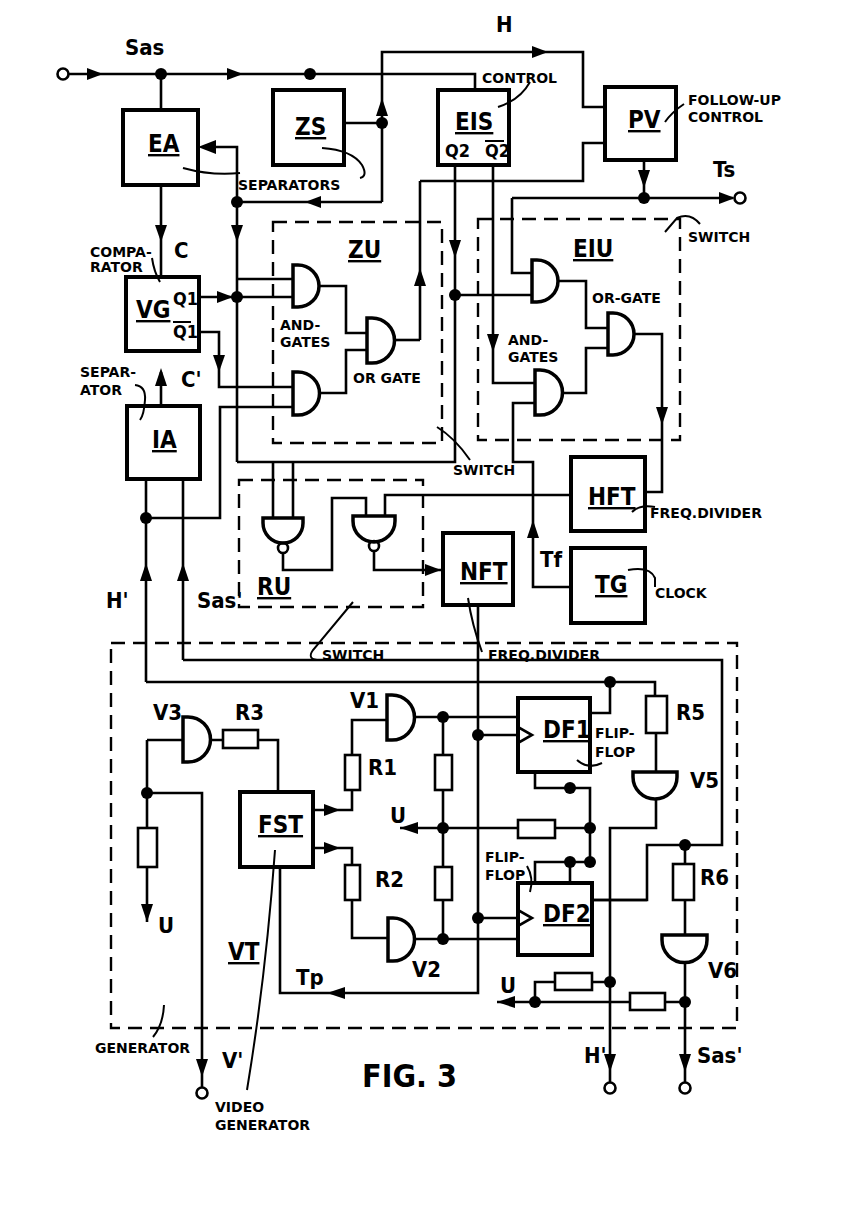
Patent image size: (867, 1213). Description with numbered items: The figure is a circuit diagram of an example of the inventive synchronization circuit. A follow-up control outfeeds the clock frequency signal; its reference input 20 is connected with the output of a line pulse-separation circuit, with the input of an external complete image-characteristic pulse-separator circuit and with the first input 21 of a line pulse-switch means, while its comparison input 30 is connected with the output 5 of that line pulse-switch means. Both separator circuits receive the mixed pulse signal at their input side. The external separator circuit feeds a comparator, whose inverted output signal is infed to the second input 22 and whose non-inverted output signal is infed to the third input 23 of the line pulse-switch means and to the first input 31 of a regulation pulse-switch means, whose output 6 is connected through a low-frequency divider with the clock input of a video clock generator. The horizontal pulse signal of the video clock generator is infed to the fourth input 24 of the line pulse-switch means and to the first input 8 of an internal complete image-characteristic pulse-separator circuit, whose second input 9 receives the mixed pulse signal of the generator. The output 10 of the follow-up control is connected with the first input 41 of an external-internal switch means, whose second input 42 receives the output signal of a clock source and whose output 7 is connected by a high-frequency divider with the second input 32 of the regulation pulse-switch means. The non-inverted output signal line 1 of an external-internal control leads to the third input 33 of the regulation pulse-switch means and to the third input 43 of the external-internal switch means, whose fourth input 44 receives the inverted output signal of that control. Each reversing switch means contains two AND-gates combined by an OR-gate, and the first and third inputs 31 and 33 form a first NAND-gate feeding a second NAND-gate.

The control switch output line 1 is at (361, 313).
The output of the line pulse-switch means 5 is at (414, 260).
The output of the regulation pulse-switch means 6 is at (408, 559).
The output of the external-internal switch means 7 is at (660, 413).
The first input of the internal complete image-characteristic pulse-separator circui 8 is at (141, 580).
The second input of the internal complete image-characteristic pulse-separator circu 9 is at (190, 569).
The output of the follow-up control 10 is at (629, 182).
The reference input of the follow-up control 20 is at (576, 82).
The comparison input of the follow-up control 30 is at (512, 155).
The first input of the line pulse-switch means 21 is at (265, 267).
The second input of the line pulse-switch means 22 is at (246, 359).
The third input of the line pulse-switch means 23 is at (246, 310).
The fourth input of the line pulse-switch means 24 is at (219, 462).
The first input of the regulation pulse-switch means 31 is at (260, 490).
The second input of the regulation pulse-switch means 32 is at (478, 494).
The third input of the regulation pulse-switch means 33 is at (309, 490).
The first input of the external-internal switch means 41 is at (532, 235).
The second input of the external-internal switch means 42 is at (528, 495).
The third input of the external-internal switch means 43 is at (494, 311).
The fourth input of the external-internal switch means 44 is at (500, 274).